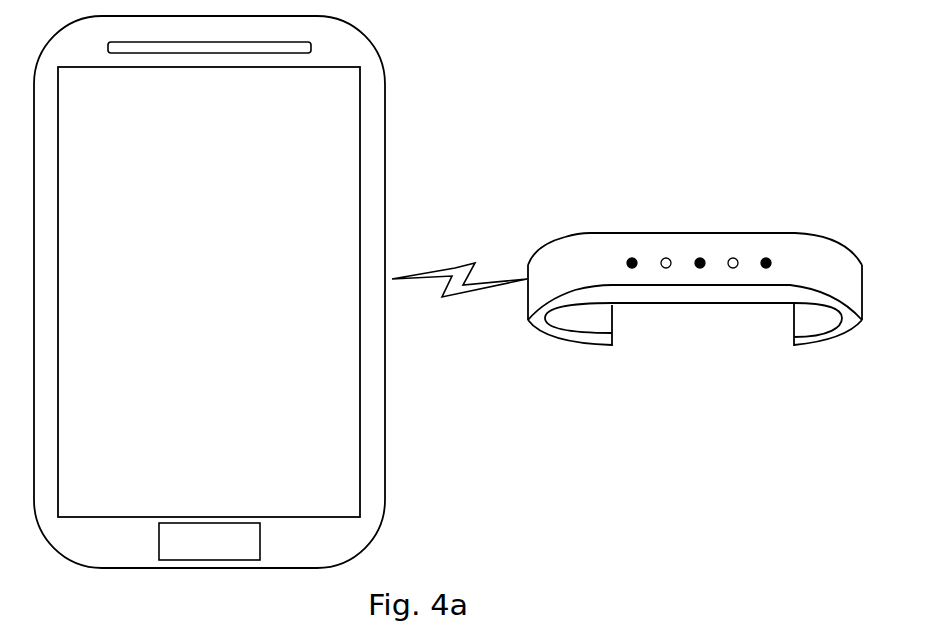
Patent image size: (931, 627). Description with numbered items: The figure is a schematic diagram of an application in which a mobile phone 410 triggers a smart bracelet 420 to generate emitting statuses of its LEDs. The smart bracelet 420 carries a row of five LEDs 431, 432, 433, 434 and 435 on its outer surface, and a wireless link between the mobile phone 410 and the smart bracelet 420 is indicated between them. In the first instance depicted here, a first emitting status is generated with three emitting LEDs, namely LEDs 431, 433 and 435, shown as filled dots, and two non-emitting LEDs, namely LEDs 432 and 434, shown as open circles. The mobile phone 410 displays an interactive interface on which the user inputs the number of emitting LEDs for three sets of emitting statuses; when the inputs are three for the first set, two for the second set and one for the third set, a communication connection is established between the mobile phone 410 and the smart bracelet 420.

The mobile phone 410 is at (385, 128).
The smart bracelet 420 is at (797, 233).
The LED 431 is at (632, 268).
The LED 432 is at (666, 258).
The LED 433 is at (700, 268).
The LED 434 is at (733, 258).
The LED 435 is at (766, 268).